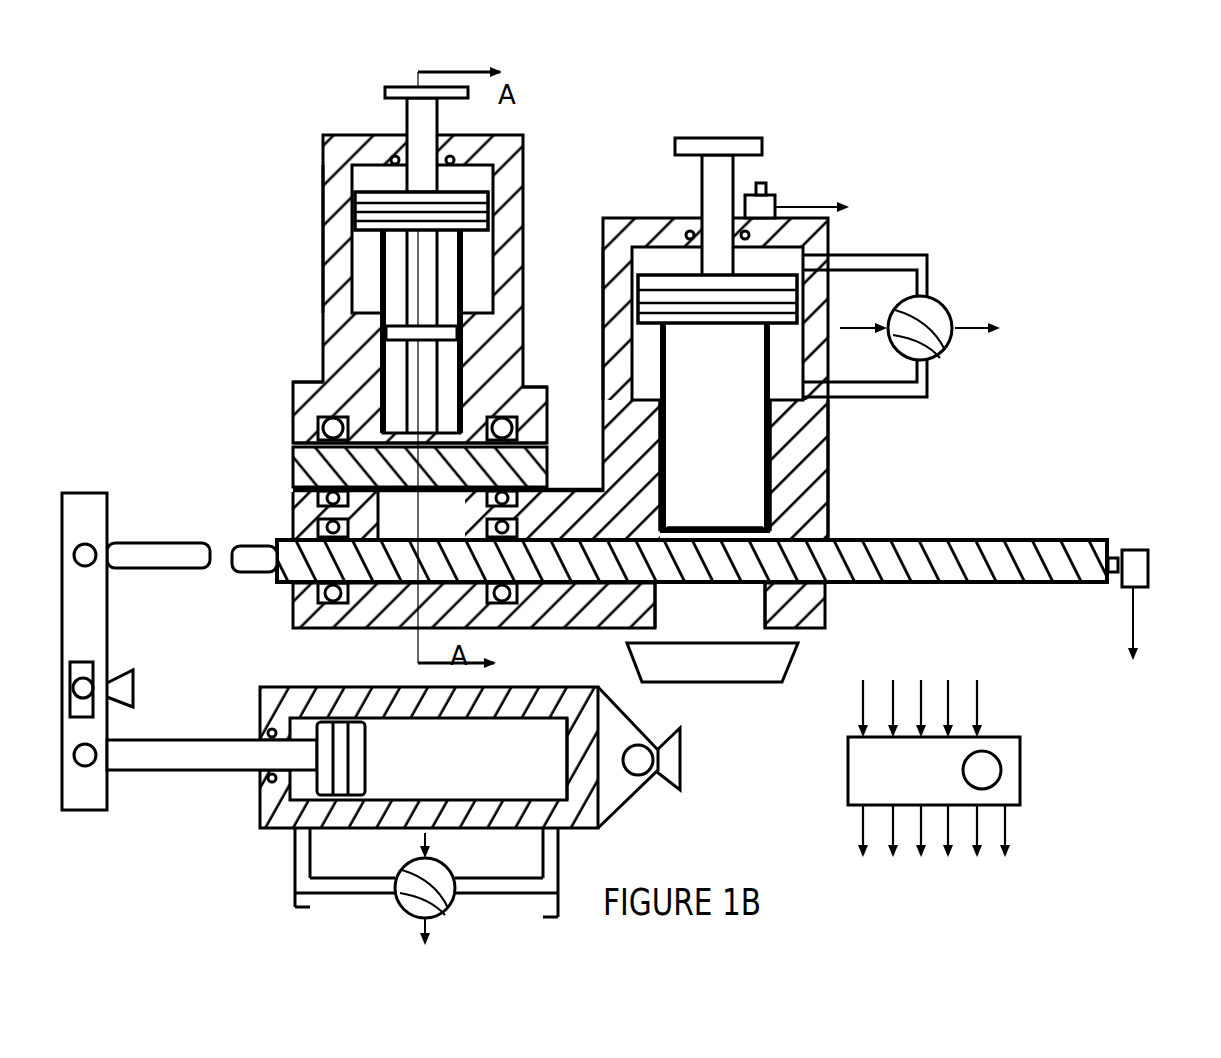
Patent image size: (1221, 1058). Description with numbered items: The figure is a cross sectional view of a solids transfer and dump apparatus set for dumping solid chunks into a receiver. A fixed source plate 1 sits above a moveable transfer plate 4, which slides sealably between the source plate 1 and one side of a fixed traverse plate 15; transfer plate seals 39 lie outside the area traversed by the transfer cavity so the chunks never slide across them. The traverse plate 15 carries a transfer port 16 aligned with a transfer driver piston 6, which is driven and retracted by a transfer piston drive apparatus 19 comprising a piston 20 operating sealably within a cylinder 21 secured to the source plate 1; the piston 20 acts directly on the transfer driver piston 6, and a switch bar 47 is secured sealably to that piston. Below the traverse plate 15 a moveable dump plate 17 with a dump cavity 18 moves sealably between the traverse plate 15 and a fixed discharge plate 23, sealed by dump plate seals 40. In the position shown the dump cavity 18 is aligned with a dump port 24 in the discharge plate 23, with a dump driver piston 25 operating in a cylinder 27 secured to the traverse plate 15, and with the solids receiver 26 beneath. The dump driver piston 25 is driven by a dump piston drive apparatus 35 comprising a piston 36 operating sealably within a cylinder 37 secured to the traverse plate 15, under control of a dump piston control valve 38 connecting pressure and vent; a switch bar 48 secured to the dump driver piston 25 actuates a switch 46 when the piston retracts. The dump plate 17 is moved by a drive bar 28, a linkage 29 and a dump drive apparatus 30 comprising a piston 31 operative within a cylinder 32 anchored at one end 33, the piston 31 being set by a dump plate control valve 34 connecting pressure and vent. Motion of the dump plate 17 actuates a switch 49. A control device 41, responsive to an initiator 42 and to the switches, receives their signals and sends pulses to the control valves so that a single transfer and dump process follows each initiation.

The source plate 1 is at (293, 405).
The transfer plate 4 is at (320, 468).
The transfer driver piston 6 is at (400, 373).
The traverse plate 15 is at (300, 511).
The transfer port 16 is at (298, 628).
The dump plate 17 is at (966, 560).
The dump cavity 18 is at (785, 530).
The transfer piston drive apparatus 19 is at (323, 165).
The piston 20 is at (370, 208).
The cylinder 21 is at (345, 270).
The discharge plate 23 is at (813, 613).
The dump port 24 is at (717, 605).
The dump driver piston 25 is at (735, 490).
The solids receiver 26 is at (720, 660).
The cylinder 27 is at (785, 453).
The drive bar 28 is at (265, 571).
The linkage 29 is at (93, 637).
The dump drive apparatus 30 is at (272, 828).
The piston 31 is at (337, 735).
The cylinder 32 is at (540, 700).
The anchored end 33 is at (635, 765).
The dump plate control valve 34 is at (420, 882).
The dump piston drive apparatus 35 is at (600, 300).
The piston 36 is at (760, 295).
The cylinder 37 is at (625, 372).
The dump piston control valve 38 is at (935, 318).
The transfer plate seals 39 is at (330, 425).
The dump plate seals 40 is at (295, 527).
The control device 41 is at (1005, 752).
The initiator 42 is at (982, 775).
The switch 46 is at (772, 205).
The switch bar 47 is at (385, 92).
The switch bar 48 is at (755, 148).
The switch 49 is at (1133, 565).